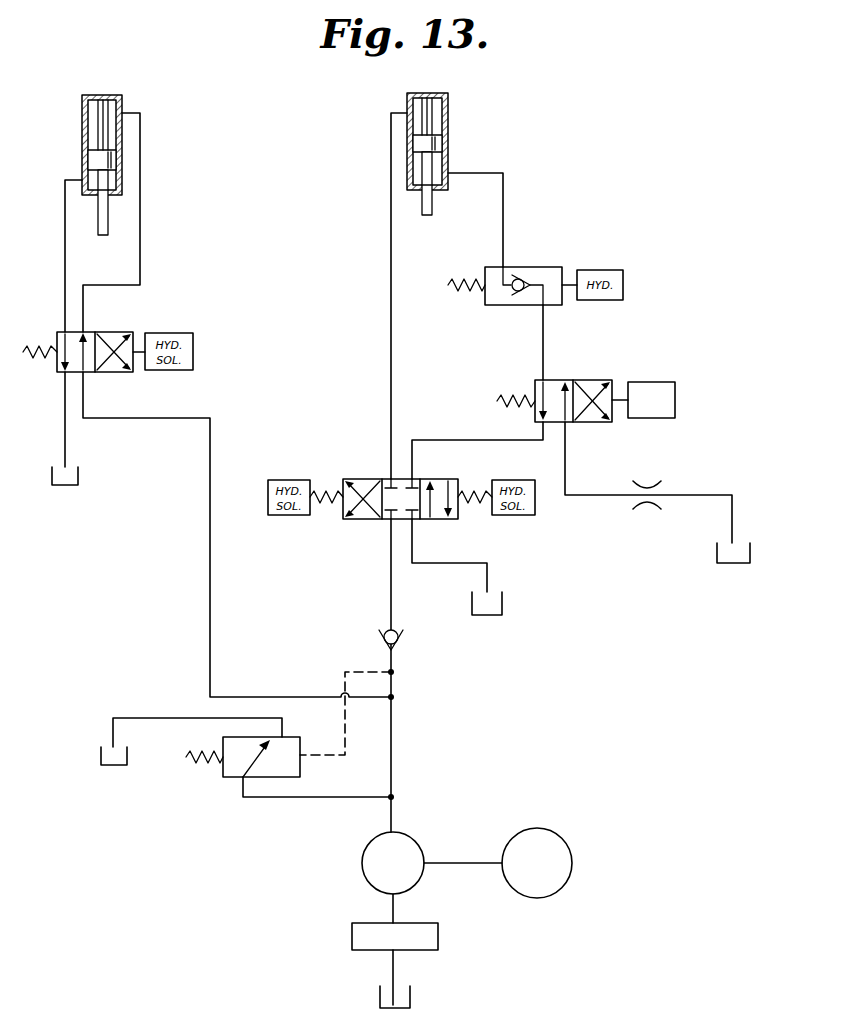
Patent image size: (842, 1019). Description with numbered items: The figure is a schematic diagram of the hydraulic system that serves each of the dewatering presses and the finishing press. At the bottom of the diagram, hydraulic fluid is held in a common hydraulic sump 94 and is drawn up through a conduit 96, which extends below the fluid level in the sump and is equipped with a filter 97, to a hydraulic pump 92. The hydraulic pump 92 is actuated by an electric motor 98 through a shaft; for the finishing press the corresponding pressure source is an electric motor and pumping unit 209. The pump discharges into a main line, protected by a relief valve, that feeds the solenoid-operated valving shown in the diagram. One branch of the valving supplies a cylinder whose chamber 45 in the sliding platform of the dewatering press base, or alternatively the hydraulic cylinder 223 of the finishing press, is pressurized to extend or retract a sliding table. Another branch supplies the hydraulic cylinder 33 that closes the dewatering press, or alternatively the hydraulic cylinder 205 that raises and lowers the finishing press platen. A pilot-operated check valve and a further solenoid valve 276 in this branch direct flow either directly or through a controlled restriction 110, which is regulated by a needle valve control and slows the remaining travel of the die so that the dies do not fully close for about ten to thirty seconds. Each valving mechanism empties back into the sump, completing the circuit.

The chamber 45 is at (121, 101).
The hydraulic cylinder 223 is at (156, 157).
The hydraulic cylinder 33 is at (447, 115).
The hydraulic cylinder 205 is at (480, 154).
The solenoid valve 276 is at (590, 380).
The restriction 110 is at (647, 506).
The hydraulic pump 92 is at (362, 857).
The electric motor 98 is at (573, 865).
The electric motor and pumping unit 209 is at (586, 863).
The conduit 96 is at (393, 906).
The filter 97 is at (352, 936).
The hydraulic sump 94 is at (380, 996).